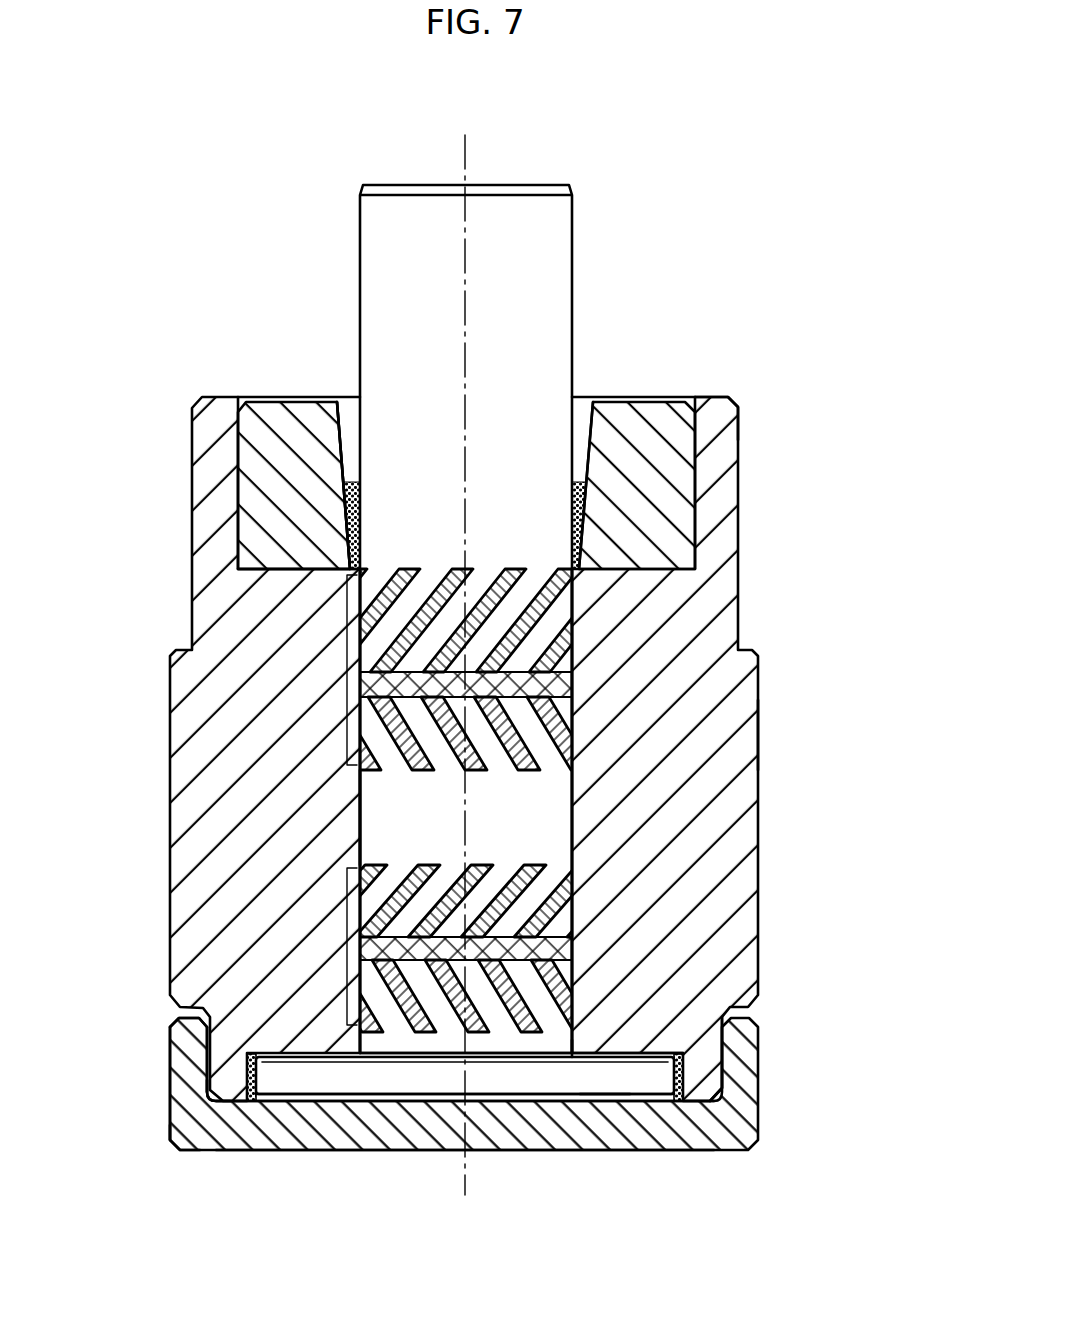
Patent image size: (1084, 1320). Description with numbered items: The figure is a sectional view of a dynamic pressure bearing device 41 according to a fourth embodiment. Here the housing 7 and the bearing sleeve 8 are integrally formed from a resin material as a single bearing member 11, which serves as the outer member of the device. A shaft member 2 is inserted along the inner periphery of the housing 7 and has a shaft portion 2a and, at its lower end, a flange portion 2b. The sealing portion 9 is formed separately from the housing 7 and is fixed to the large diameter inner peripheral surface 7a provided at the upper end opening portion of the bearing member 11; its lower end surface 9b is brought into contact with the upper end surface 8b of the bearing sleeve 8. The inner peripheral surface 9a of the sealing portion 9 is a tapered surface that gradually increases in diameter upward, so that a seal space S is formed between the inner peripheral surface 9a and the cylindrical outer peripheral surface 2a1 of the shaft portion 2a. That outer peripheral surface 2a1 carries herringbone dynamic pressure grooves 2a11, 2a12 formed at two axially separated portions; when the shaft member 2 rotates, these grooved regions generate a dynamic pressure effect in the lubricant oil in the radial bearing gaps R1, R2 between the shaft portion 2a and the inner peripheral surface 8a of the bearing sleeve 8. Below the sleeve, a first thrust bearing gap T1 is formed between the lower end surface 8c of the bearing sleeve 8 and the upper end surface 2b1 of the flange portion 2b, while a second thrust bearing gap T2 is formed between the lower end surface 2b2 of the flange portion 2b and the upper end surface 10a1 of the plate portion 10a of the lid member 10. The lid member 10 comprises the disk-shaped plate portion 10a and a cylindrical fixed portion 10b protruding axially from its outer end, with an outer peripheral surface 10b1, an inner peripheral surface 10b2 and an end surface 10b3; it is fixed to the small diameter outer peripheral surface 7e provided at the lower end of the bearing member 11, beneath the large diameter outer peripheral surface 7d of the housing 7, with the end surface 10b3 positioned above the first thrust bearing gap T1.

The dynamic pressure bearing device 41 is at (740, 223).
The shaft member 2 is at (585, 238).
The shaft portion 2a is at (537, 425).
The outer peripheral surface of the shaft portion 2a1 is at (597, 405).
The herringbone dynamic pressure groove 2a11 is at (425, 578).
The herringbone dynamic pressure groove 2a12 is at (548, 880).
The flange portion 2b is at (557, 1083).
The upper end surface of the flange portion 2b1 is at (606, 1046).
The lower end surface of the flange portion 2b2 is at (620, 1103).
The housing 7 is at (724, 500).
The large diameter inner peripheral surface 7a is at (676, 464).
The large diameter outer peripheral surface 7d is at (166, 890).
The small diameter outer peripheral surface 7e is at (737, 1055).
The bearing sleeve 8 is at (660, 636).
The inner peripheral surface of the bearing sleeve 8a is at (363, 817).
The upper end surface of the bearing sleeve 8b is at (300, 566).
The lower end surface of the bearing sleeve 8c is at (318, 1056).
The sealing portion 9 is at (266, 401).
The inner peripheral surface of the sealing portion 9a is at (341, 398).
The lower end surface of the sealing portion 9b is at (350, 580).
The seal space S is at (588, 409).
The first radial bearing gap R1 is at (345, 668).
The second radial bearing gap R2 is at (329, 945).
The lid member 10 is at (500, 1152).
The plate portion 10a is at (421, 1130).
The upper end surface of the plate portion 10a1 is at (350, 1100).
The fixed portion 10b is at (190, 1106).
The outer peripheral surface of the fixed portion 10b1 is at (226, 1102).
The inner peripheral surface of the fixed portion 10b2 is at (195, 1135).
The end surface of the fixed portion 10b3 is at (200, 1015).
The first thrust bearing gap T1 is at (609, 1049).
The second thrust bearing gap T2 is at (603, 1104).
The bearing member 11 is at (767, 733).